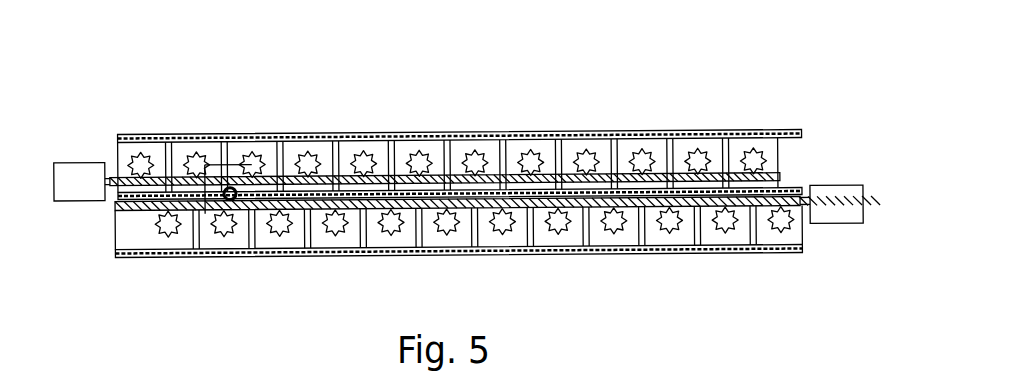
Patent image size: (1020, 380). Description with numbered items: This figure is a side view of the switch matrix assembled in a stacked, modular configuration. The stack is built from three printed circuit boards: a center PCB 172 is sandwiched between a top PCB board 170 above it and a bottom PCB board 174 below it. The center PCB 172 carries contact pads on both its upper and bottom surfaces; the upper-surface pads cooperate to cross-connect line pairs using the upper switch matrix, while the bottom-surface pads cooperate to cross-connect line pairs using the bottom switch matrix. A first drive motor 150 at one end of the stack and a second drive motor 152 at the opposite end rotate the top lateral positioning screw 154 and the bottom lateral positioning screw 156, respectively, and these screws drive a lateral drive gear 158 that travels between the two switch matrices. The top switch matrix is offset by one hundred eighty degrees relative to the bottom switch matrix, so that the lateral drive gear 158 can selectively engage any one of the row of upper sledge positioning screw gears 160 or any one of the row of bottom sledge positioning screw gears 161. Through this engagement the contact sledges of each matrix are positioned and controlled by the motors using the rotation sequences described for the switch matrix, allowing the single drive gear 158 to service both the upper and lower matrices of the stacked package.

The first drive motor 150 is at (80, 201).
The second drive motor 152 is at (833, 223).
The top lateral positioning screw 154 is at (781, 176).
The bottom lateral positioning screw 156 is at (113, 207).
The lateral drive gear 158 is at (245, 192).
The upper sledge positioning screw gears 160 is at (478, 160).
The bottom sledge positioning screw gears 161 is at (500, 222).
The top PCB board 170 is at (679, 135).
The center PCB 172 is at (808, 182).
The bottom PCB board 174 is at (678, 253).